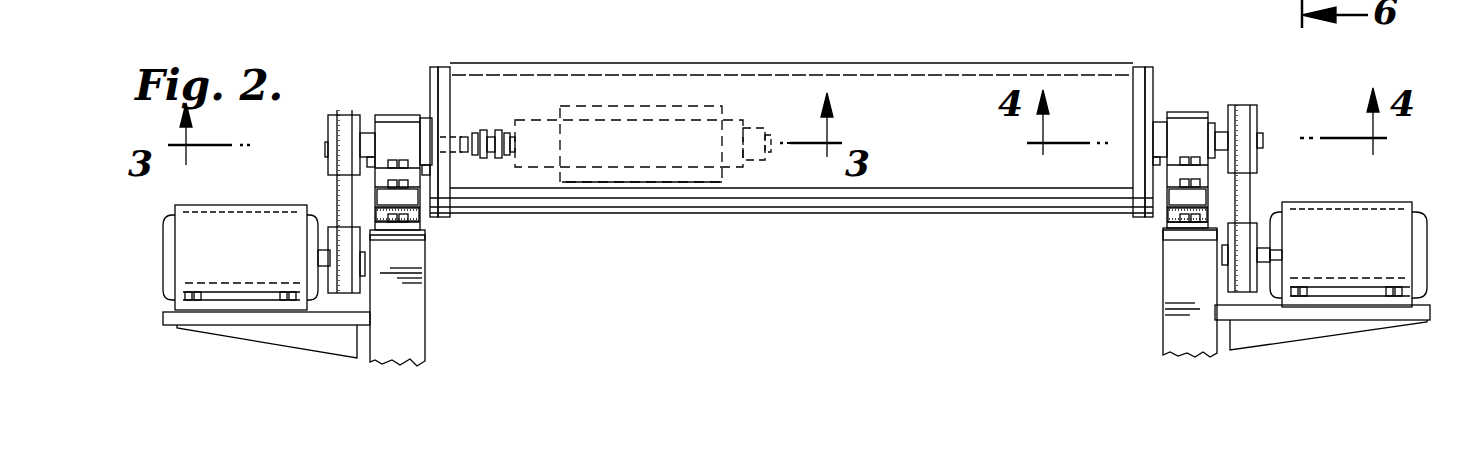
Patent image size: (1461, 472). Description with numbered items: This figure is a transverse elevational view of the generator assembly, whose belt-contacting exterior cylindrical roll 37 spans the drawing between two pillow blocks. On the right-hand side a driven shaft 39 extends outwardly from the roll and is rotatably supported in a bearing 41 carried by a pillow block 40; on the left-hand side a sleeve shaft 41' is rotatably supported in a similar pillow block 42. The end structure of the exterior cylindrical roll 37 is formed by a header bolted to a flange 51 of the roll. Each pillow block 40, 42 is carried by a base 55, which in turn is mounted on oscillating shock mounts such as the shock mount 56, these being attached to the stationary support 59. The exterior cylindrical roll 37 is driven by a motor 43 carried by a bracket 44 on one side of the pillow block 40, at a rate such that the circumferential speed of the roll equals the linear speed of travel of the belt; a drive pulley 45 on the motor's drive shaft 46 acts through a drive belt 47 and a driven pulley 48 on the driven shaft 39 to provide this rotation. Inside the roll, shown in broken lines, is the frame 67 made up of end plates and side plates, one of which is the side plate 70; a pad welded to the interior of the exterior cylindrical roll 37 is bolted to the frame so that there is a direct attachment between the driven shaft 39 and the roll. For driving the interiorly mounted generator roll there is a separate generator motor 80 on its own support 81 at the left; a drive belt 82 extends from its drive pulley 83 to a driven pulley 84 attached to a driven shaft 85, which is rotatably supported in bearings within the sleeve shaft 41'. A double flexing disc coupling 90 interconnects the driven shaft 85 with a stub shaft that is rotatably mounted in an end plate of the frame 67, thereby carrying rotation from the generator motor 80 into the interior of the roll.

The exterior cylindrical roll 37 is at (960, 77).
The driven shaft 39 is at (1263, 130).
The pillow block 40 is at (1192, 118).
The bearing 41 is at (1162, 108).
The sleeve shaft 41' is at (458, 99).
The pillow block 42 is at (396, 128).
The motor 43 is at (1385, 215).
The bracket 44 is at (1353, 313).
The drive pulley 45 is at (1228, 277).
The drive shaft 46 is at (1262, 252).
The drive belt 47 is at (1245, 198).
The driven pulley 48 is at (1245, 110).
The flange 51 is at (1140, 70).
The base 55 is at (412, 195).
The oscillating shock mount 56 is at (415, 220).
The support 59 is at (410, 338).
The frame 67 is at (689, 196).
The side plate 70 is at (627, 105).
The generator motor 80 is at (198, 225).
The support 81 is at (205, 322).
The drive belt 82 is at (340, 188).
The drive pulley 83 is at (333, 237).
The driven pulley 84 is at (330, 122).
The driven shaft 85 is at (367, 133).
The double flexing disc coupling 90 is at (486, 130).